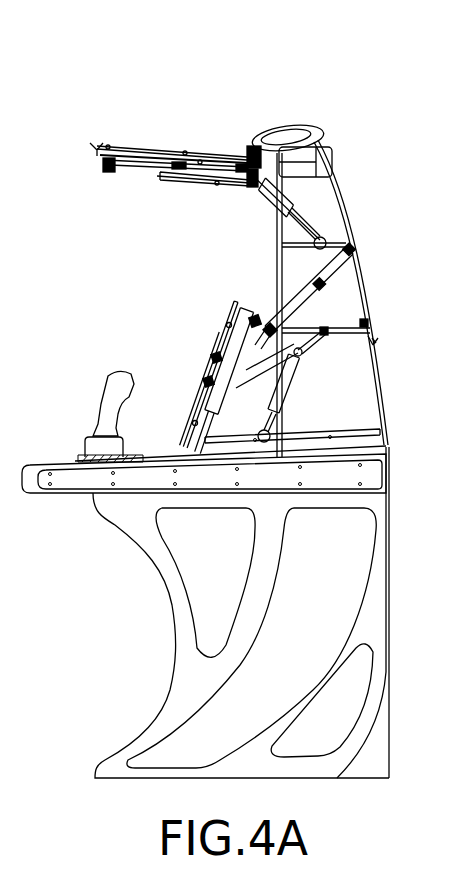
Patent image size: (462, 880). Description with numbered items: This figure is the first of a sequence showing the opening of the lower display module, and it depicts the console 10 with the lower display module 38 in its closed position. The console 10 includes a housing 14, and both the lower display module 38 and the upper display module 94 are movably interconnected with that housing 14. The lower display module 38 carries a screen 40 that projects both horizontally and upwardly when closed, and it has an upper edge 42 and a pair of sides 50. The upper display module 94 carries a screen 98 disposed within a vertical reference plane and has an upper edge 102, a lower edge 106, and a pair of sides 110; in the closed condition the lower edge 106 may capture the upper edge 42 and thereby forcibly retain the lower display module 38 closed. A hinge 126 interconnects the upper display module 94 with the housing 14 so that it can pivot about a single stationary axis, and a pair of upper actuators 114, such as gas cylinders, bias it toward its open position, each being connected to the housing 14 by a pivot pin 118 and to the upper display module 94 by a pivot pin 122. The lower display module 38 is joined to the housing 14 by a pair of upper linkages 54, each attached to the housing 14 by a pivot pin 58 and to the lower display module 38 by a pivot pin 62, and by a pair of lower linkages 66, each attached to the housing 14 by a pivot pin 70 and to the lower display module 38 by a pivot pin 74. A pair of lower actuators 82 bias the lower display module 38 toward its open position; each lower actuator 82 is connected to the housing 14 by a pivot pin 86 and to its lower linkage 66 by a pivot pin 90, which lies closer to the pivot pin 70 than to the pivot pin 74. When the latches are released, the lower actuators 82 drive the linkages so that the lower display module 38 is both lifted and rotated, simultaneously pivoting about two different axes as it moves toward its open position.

The console 10 is at (297, 97).
The housing 14 is at (312, 142).
The lower display module 38 is at (170, 351).
The screen 40 is at (224, 338).
The upper edge 42 is at (243, 308).
The sides 50 is at (195, 431).
The upper linkages 54 is at (360, 265).
The pivot pin 58 is at (358, 256).
The pivot pin 62 is at (214, 364).
The lower linkages 66 is at (373, 343).
The pivot pin 70 is at (330, 331).
The pivot pin 74 is at (207, 397).
The lower actuators 82 is at (292, 384).
The pivot pin 86 is at (290, 432).
The pivot pin 90 is at (303, 351).
The upper display module 94 is at (125, 125).
The screen 98 is at (230, 153).
The upper edge 102 is at (333, 152).
The lower edge 106 is at (97, 148).
The sides 110 is at (142, 166).
The upper actuators 114 is at (330, 205).
The pivot pin 118 is at (340, 230).
The pivot pin 122 is at (256, 190).
The hinge 126 is at (249, 142).